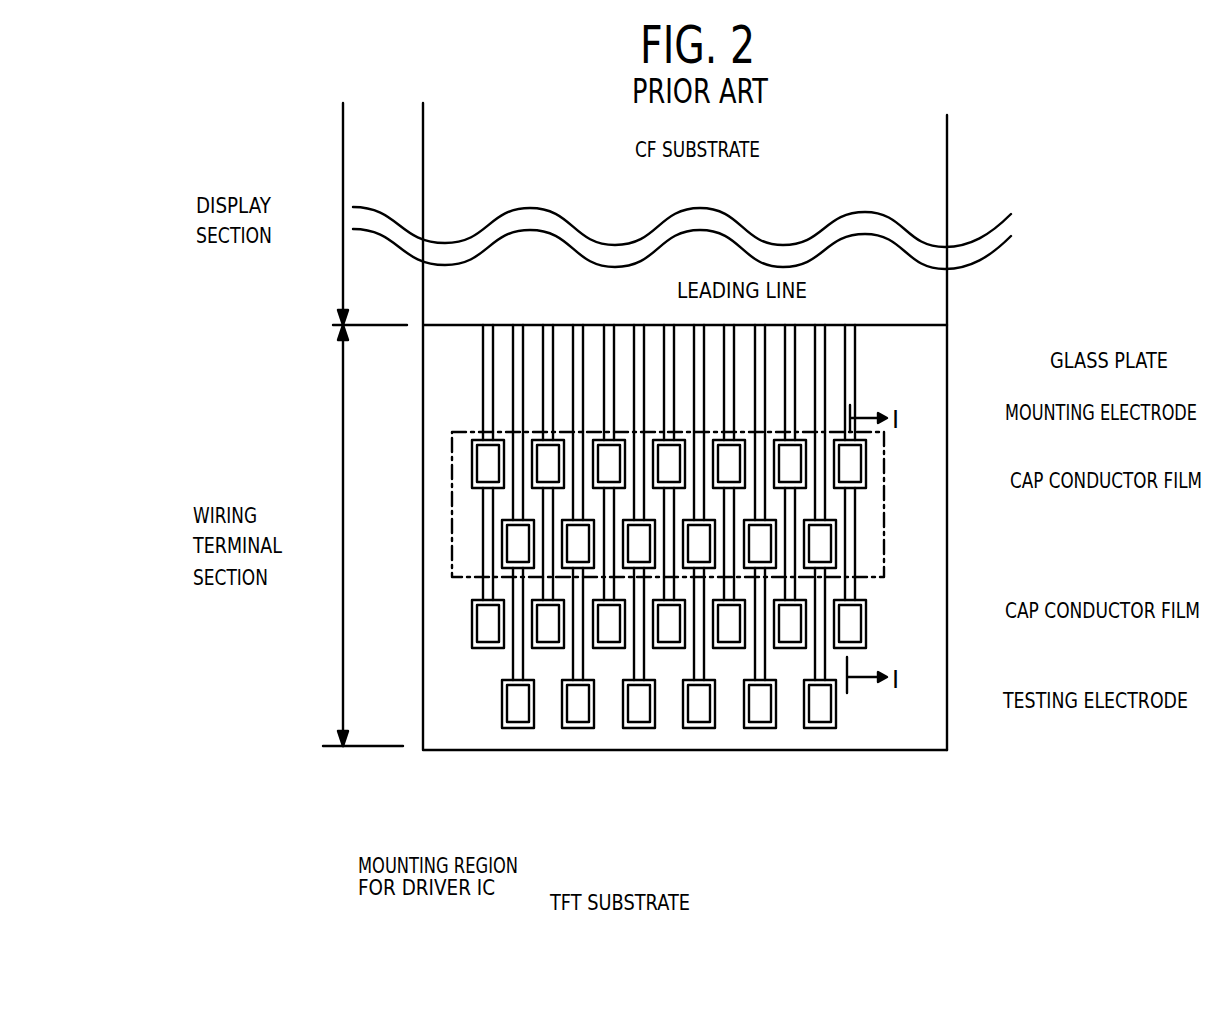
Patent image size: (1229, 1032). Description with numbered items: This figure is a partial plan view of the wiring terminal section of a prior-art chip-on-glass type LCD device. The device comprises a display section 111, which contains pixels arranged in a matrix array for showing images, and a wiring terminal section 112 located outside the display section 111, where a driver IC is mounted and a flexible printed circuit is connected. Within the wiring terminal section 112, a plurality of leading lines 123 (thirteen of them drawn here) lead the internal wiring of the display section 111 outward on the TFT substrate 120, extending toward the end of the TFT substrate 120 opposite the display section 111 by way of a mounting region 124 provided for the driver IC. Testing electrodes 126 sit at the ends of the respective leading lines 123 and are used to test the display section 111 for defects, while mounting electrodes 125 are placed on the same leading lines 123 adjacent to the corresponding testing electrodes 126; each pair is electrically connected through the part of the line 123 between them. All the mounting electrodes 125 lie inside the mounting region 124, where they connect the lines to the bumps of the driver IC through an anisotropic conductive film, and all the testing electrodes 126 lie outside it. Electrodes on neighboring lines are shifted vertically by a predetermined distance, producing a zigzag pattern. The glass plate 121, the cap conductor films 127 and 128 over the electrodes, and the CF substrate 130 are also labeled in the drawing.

The display section 111 is at (320, 214).
The wiring terminal section 112 is at (319, 535).
The TFT substrate 120 is at (627, 770).
The glass plate 121 is at (930, 357).
The leading line 123 is at (853, 362).
The mounting region 124 is at (445, 588).
The mounting electrode 125 is at (868, 447).
The testing electrode 126 is at (863, 648).
The cap conductor film 127 is at (850, 470).
The cap conductor film 128 is at (850, 625).
The CF substrate 130 is at (705, 191).